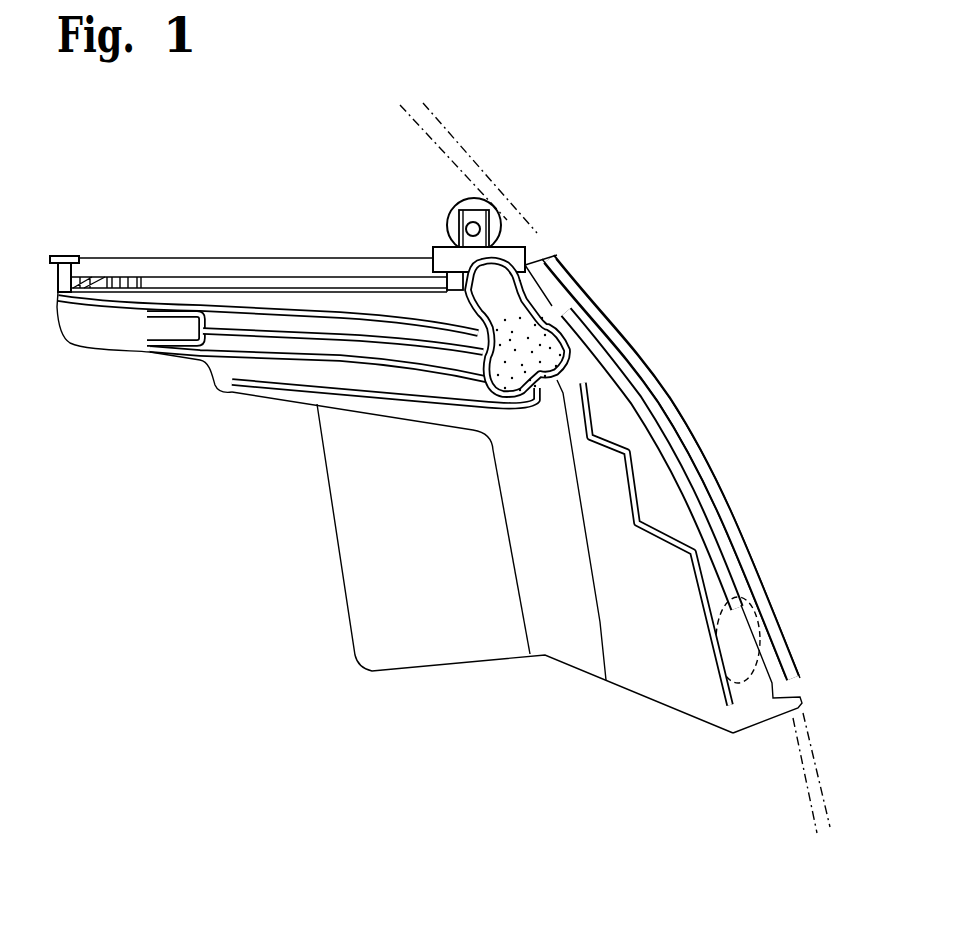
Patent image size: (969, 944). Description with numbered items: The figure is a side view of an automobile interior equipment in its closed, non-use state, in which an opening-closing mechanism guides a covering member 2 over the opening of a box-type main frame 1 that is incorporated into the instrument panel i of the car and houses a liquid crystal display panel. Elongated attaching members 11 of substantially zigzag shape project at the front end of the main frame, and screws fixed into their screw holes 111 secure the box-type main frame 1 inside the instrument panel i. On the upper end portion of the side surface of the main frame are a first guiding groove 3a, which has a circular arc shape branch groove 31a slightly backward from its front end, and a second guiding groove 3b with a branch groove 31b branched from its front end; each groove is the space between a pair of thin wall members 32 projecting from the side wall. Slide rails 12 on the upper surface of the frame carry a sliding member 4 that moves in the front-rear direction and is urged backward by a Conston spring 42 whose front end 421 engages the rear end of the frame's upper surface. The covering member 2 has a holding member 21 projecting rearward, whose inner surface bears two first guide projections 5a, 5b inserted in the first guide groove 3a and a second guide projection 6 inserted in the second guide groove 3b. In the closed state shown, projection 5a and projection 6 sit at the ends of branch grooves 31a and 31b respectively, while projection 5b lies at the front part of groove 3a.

The box-type main frame 1 is at (557, 605).
The attaching member 11 is at (701, 607).
The screw hole 111 is at (597, 409).
The slide rail 12 is at (161, 272).
The covering member 2 is at (657, 400).
The holding member 21 is at (500, 283).
The first guiding groove 3a is at (275, 316).
The second guiding groove 3b is at (278, 363).
The branch groove 31a is at (573, 270).
The branch groove 31b is at (545, 400).
The thin wall member 32 is at (328, 330).
The sliding member 4 is at (452, 257).
The Conston spring 42 is at (493, 228).
The front end of the Conston spring 421 is at (63, 254).
The first guide projection 5a is at (573, 297).
The first guide projection 5b is at (603, 333).
The second guide projection 6 is at (487, 401).
The instrument panel i is at (490, 167).